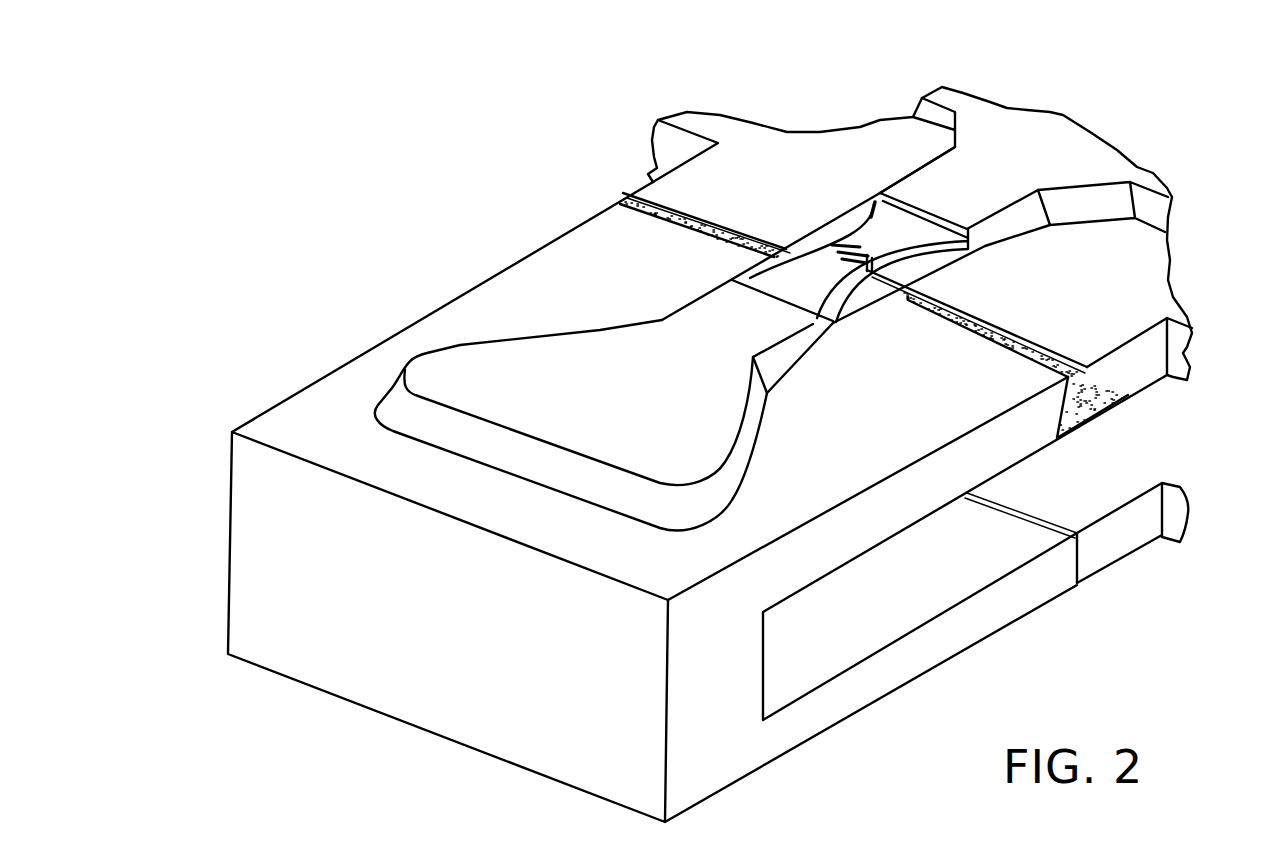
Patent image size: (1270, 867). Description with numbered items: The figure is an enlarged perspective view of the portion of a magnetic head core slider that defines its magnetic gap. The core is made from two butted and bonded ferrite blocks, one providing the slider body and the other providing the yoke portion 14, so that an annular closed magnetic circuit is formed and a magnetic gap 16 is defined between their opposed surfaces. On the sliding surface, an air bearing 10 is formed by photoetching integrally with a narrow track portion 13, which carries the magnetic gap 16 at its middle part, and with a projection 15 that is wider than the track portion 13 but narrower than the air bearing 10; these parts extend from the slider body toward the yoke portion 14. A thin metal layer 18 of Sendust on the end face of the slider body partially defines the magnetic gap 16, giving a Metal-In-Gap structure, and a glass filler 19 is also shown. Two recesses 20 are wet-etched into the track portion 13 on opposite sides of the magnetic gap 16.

The air bearing 10 is at (1163, 215).
The track portion 13 is at (849, 232).
The yoke portion 14 is at (336, 218).
The projection 15 is at (452, 343).
The magnetic gap 16 is at (813, 290).
The metal layer 18 is at (993, 320).
The filler 19 is at (1100, 408).
The recess 20 is at (788, 291).